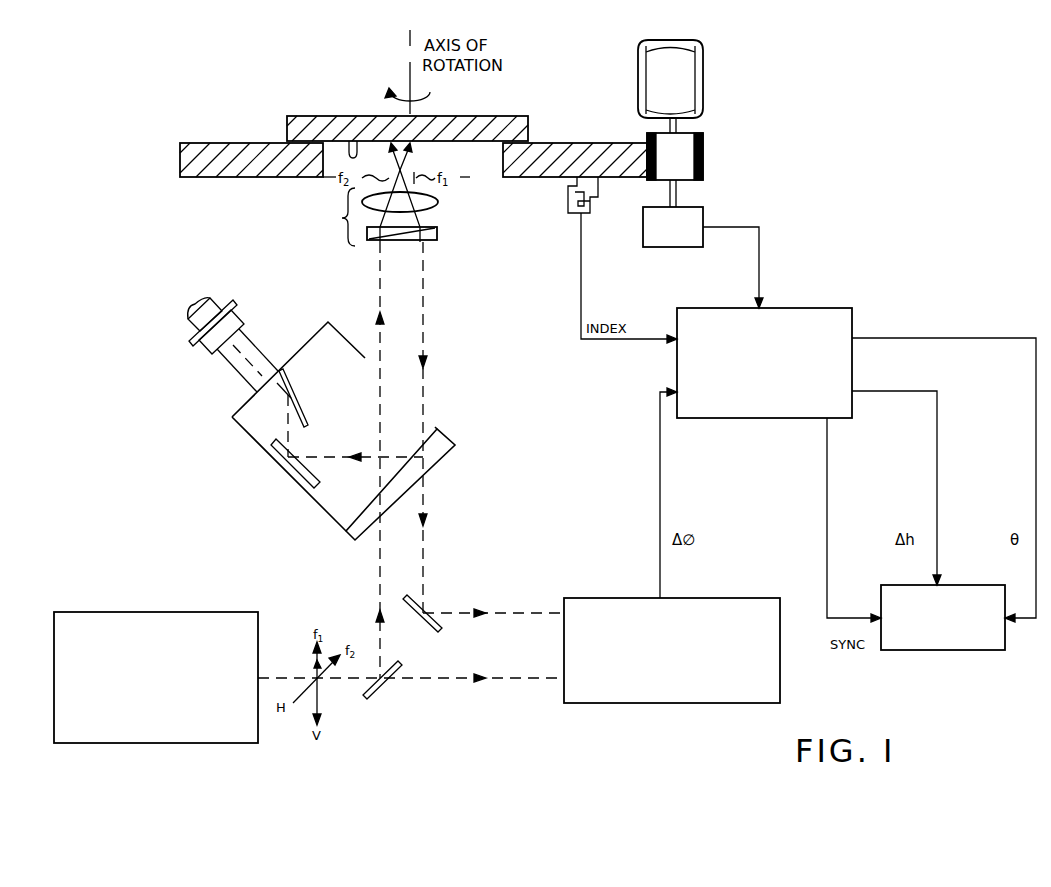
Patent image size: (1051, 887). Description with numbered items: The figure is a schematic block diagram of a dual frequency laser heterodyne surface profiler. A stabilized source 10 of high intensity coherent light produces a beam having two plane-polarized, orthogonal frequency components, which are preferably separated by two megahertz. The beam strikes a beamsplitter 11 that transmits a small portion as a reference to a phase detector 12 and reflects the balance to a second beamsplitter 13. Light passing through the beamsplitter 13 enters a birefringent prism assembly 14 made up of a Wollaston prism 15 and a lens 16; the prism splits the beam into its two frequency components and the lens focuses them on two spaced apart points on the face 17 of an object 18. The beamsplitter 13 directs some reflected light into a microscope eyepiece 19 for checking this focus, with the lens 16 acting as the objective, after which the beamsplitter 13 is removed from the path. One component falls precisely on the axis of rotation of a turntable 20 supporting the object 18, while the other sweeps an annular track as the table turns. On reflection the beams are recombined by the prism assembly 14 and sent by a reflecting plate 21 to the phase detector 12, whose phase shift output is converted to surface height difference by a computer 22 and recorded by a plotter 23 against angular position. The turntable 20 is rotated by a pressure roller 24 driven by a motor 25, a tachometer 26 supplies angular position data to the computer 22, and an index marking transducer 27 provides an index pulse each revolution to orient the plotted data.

The stabilized source 10 is at (127, 612).
The beamsplitter 11 is at (384, 690).
The phase detector 12 is at (592, 703).
The second beamsplitter 13 is at (455, 452).
The birefringent prism assembly 14 is at (397, 217).
The Wollaston prism 15 is at (437, 233).
The lens 16 is at (438, 203).
The face 17 is at (352, 141).
The object 18 is at (528, 116).
The microscope eyepiece 19 is at (192, 334).
The turntable 20 is at (230, 143).
The reflecting plate 21 is at (426, 630).
The computer 22 is at (822, 308).
The plotter 23 is at (983, 650).
The pressure roller 24 is at (703, 160).
The motor 25 is at (703, 82).
The tachometer 26 is at (703, 214).
The index marking transducer 27 is at (560, 220).